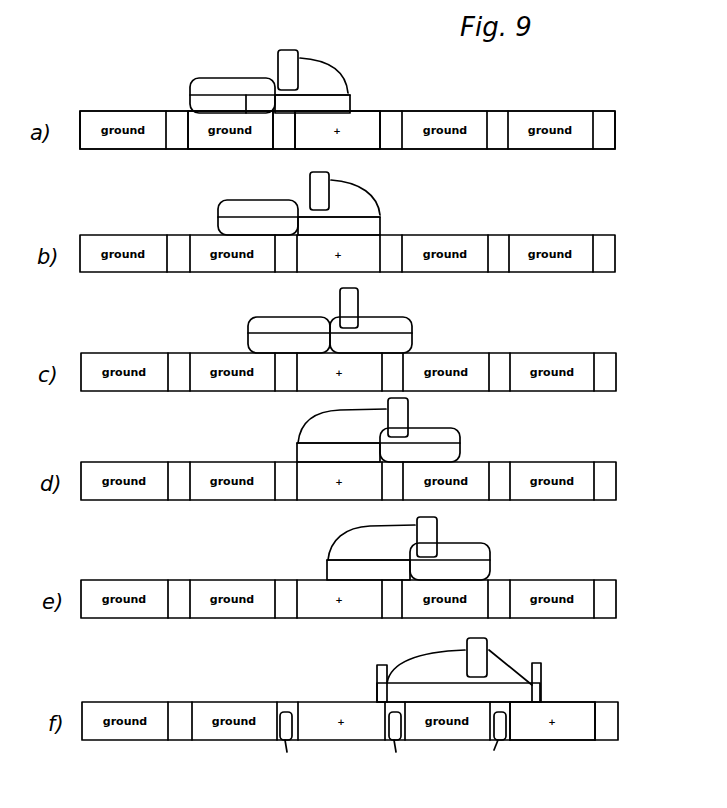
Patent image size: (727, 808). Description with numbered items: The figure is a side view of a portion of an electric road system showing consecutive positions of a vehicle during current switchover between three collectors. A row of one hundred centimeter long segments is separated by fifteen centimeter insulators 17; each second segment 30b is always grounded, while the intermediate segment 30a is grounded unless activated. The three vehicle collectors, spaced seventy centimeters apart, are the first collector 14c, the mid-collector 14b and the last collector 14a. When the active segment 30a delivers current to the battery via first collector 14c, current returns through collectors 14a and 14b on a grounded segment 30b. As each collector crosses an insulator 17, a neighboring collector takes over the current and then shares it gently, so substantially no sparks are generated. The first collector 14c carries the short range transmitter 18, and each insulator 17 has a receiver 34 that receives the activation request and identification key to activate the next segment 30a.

The last collector 14a is at (188, 100).
The mid-collector 14b is at (248, 100).
The first collector 14c is at (350, 99).
The insulator 17 is at (500, 150).
The short range transmitter 18 is at (376, 672).
The intermediate segment 30a is at (345, 150).
The grounded segment 30b is at (250, 150).
The receiver 34 is at (494, 745).